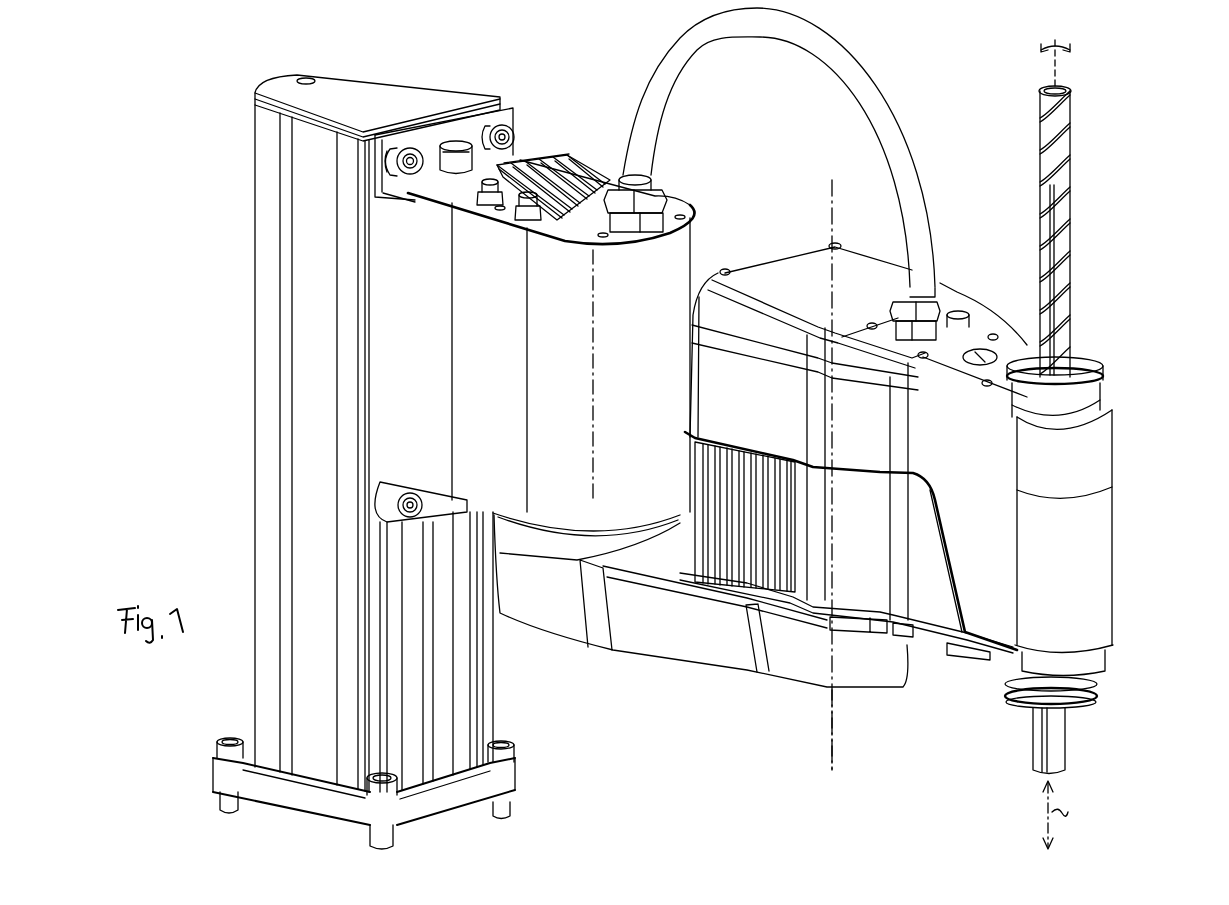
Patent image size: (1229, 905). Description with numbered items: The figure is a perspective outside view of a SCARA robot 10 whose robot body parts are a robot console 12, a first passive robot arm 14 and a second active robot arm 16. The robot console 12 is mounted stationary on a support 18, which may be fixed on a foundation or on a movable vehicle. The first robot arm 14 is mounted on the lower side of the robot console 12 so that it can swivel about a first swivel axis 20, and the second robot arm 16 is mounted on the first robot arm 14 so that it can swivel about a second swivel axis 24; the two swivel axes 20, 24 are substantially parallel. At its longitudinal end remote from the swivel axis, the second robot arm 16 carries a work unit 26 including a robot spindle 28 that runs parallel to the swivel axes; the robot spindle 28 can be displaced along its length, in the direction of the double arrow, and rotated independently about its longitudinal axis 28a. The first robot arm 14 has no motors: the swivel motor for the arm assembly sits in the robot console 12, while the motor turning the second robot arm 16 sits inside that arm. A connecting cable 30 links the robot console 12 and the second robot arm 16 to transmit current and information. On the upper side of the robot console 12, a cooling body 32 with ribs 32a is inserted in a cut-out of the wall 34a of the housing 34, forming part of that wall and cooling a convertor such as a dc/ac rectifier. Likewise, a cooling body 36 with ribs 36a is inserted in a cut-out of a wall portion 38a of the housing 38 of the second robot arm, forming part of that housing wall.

The SCARA robot 10 is at (1120, 176).
The robot console 12 is at (425, 371).
The first passive robot arm 14 is at (680, 643).
The second active robot arm 16 is at (962, 468).
The support 18 is at (312, 344).
The first swivel axis 20 is at (597, 412).
The second swivel axis 24 is at (836, 722).
The work unit 26 is at (1120, 375).
The robot spindle 28 is at (1064, 262).
The longitudinal axis 28a is at (1060, 72).
The connecting cable 30 is at (645, 130).
The cooling body 32 is at (573, 158).
The ribs 32a is at (599, 160).
The housing 34 is at (380, 258).
The wall 34a is at (681, 201).
The cooling body 36 is at (716, 444).
The ribs 36a is at (748, 451).
The housing 38 is at (920, 598).
The wall portion 38a is at (743, 607).